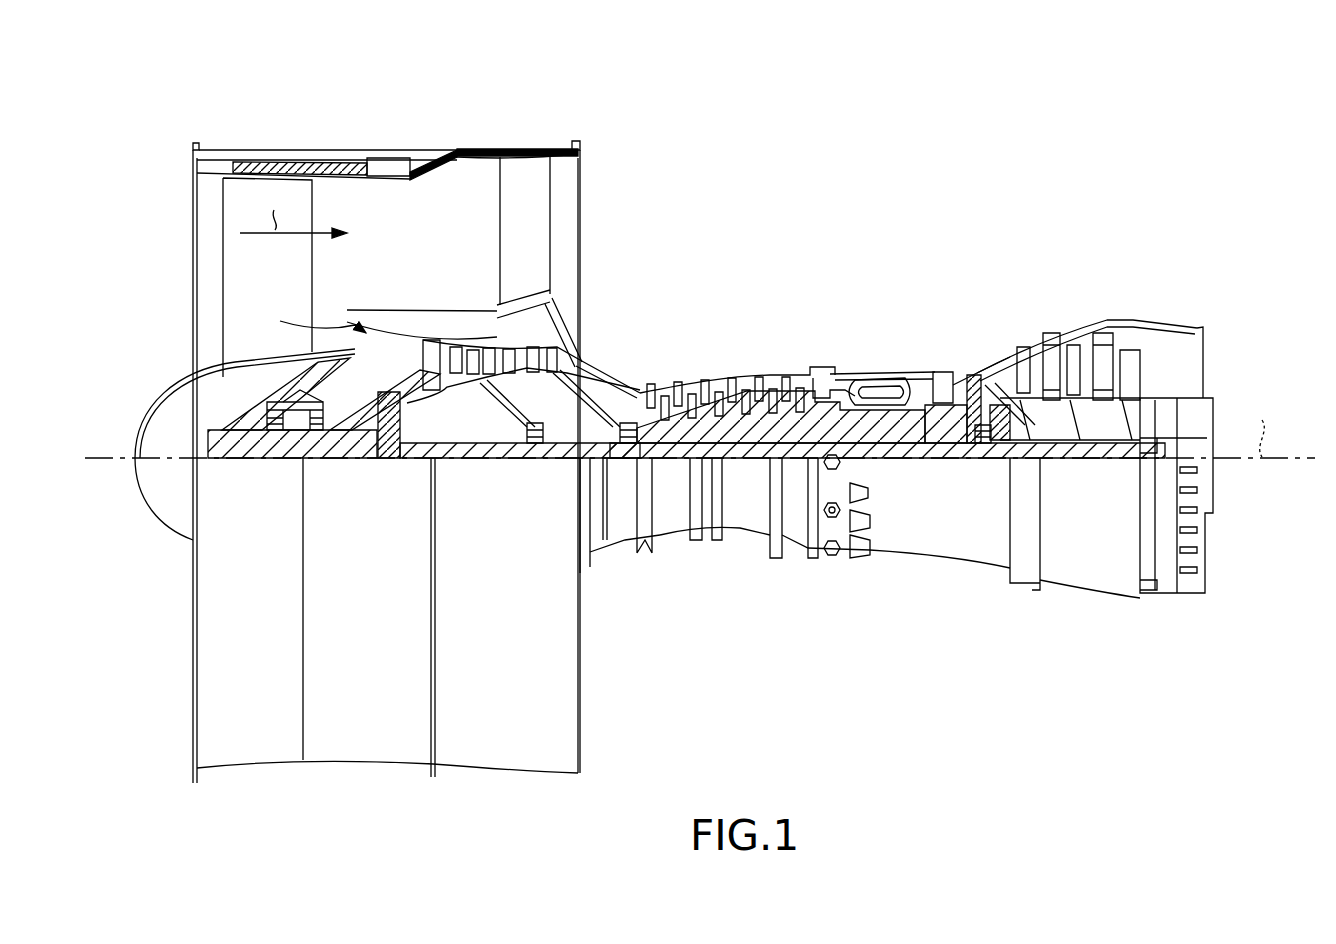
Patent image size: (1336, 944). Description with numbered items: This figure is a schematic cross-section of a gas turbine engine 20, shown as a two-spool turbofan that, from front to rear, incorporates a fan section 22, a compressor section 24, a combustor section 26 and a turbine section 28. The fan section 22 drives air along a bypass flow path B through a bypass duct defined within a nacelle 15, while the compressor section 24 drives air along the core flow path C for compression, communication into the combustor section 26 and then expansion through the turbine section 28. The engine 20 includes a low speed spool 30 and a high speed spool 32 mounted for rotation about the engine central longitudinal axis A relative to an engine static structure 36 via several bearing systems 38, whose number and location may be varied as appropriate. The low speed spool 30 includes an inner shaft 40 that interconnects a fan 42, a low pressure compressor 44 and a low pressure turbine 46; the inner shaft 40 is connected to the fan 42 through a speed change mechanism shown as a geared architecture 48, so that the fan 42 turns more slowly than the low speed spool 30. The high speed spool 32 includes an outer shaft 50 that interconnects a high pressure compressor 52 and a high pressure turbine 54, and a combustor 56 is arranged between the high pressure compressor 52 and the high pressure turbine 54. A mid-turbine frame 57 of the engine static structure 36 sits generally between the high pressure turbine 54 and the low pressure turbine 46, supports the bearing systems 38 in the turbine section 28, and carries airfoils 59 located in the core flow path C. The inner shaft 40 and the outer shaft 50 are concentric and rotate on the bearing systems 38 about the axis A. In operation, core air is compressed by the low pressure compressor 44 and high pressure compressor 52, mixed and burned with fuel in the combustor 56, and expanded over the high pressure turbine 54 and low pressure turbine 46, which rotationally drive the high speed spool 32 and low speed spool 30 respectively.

The nacelle 15 is at (384, 161).
The gas turbine engine 20 is at (900, 160).
The fan section 22 is at (302, 133).
The compressor section 24 is at (628, 352).
The combustor section 26 is at (871, 333).
The turbine section 28 is at (1031, 298).
The low speed spool 30 is at (748, 493).
The high speed spool 32 is at (788, 405).
The engine static structure 36 is at (795, 530).
The bearing systems 38 is at (537, 447).
The inner shaft 40 is at (605, 462).
The fan 42 is at (277, 271).
The low pressure compressor 44 is at (515, 350).
The low pressure turbine 46 is at (1078, 343).
The geared architecture 48 is at (388, 460).
The outer shaft 50 is at (868, 443).
The high pressure compressor 52 is at (745, 388).
The high pressure turbine 54 is at (937, 372).
The combustor 56 is at (895, 386).
The mid-turbine frame 57 is at (990, 358).
The airfoils 59 is at (996, 398).